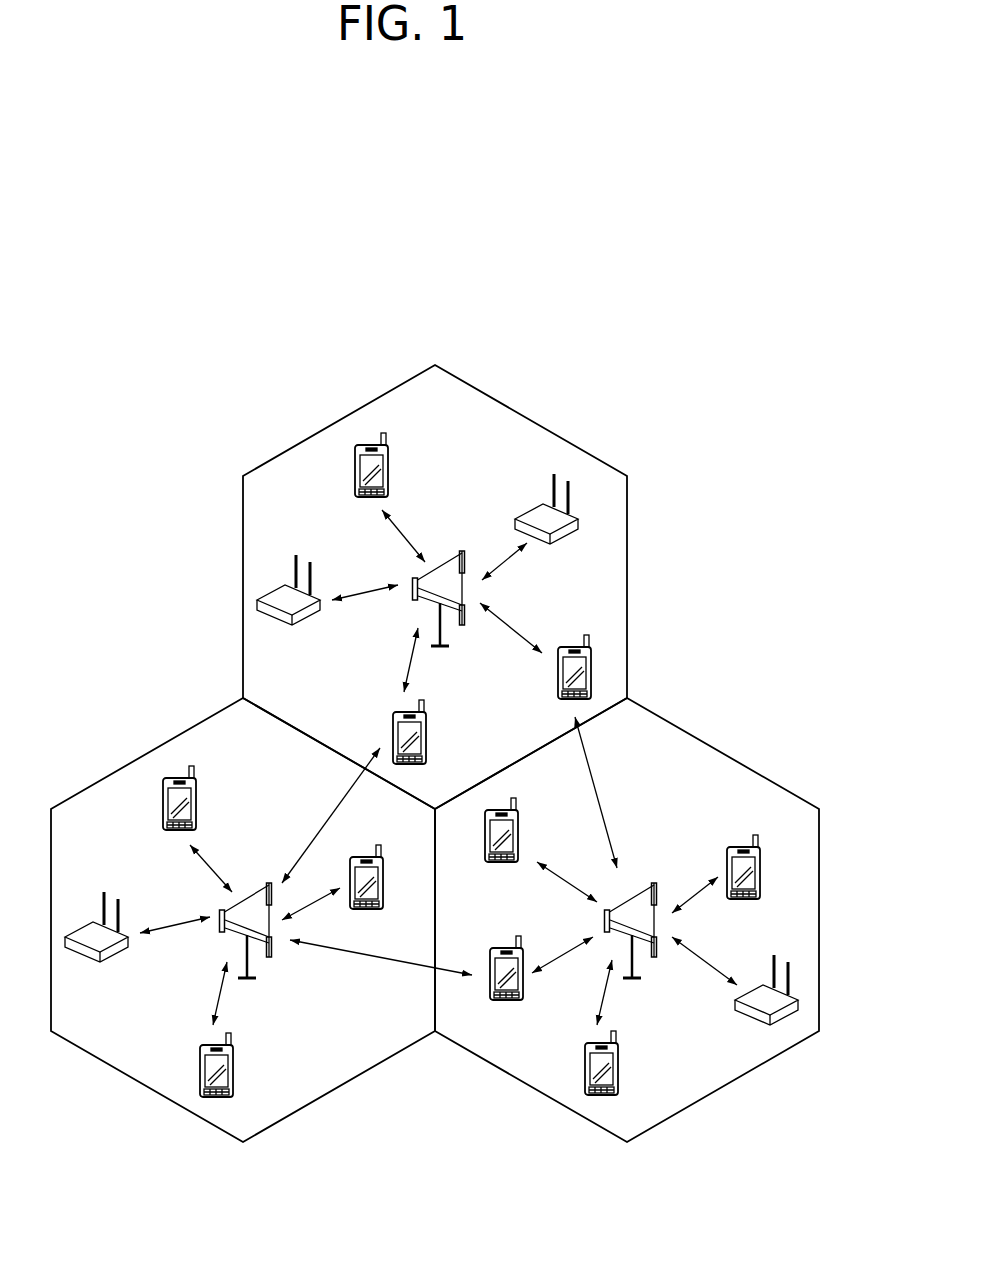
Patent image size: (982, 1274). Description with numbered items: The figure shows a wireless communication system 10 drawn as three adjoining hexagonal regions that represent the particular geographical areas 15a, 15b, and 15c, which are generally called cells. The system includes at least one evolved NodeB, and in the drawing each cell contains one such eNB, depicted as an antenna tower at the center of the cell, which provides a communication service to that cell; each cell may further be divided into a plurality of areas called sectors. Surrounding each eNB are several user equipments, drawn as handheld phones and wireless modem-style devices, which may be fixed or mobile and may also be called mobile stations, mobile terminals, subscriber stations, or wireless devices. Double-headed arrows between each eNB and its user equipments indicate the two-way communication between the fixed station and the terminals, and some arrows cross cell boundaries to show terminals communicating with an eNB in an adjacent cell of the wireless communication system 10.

The wireless communication system 10 is at (712, 483).
The cell 15a is at (628, 575).
The cell 15b is at (748, 768).
The cell 15c is at (123, 767).